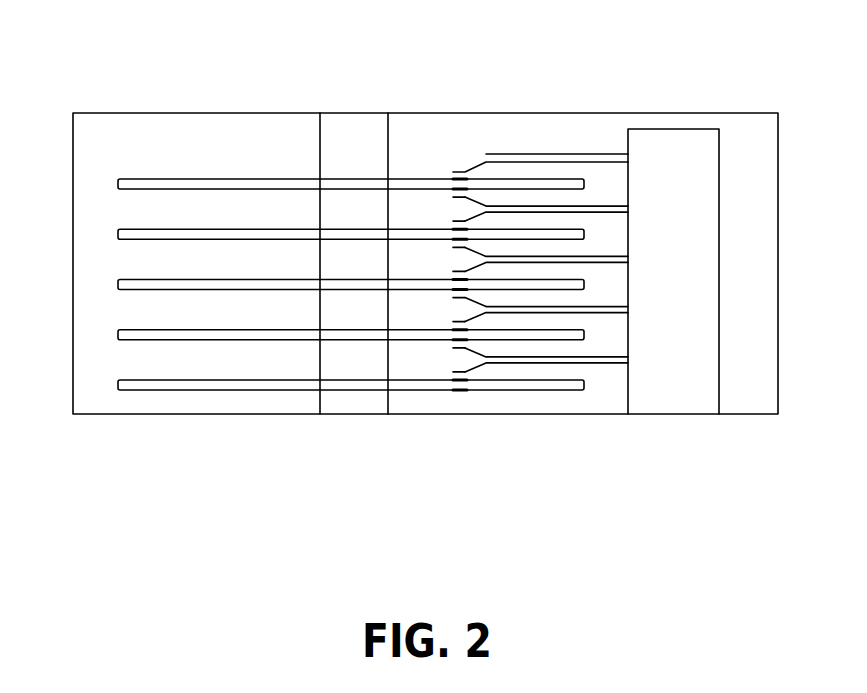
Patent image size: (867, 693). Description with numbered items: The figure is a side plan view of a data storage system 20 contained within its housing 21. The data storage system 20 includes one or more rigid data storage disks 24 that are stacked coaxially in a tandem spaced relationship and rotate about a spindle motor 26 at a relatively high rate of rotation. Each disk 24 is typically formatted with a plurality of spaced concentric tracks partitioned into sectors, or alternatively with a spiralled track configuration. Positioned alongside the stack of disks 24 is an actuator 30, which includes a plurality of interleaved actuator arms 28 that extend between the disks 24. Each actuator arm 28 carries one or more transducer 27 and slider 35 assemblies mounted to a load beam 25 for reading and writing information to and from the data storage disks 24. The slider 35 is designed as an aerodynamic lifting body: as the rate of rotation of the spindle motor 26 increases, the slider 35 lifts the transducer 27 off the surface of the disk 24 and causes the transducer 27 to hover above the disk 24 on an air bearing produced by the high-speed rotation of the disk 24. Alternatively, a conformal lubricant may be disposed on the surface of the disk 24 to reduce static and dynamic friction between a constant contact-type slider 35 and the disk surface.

The data storage system 20 is at (684, 83).
The housing 21 is at (778, 302).
The data storage disks 24 is at (117, 181).
The load beam 25 is at (463, 171).
The spindle motor 26 is at (347, 405).
The transducer 27 is at (452, 174).
The actuator arms 28 is at (537, 154).
The actuator 30 is at (673, 385).
The slider 35 is at (457, 174).